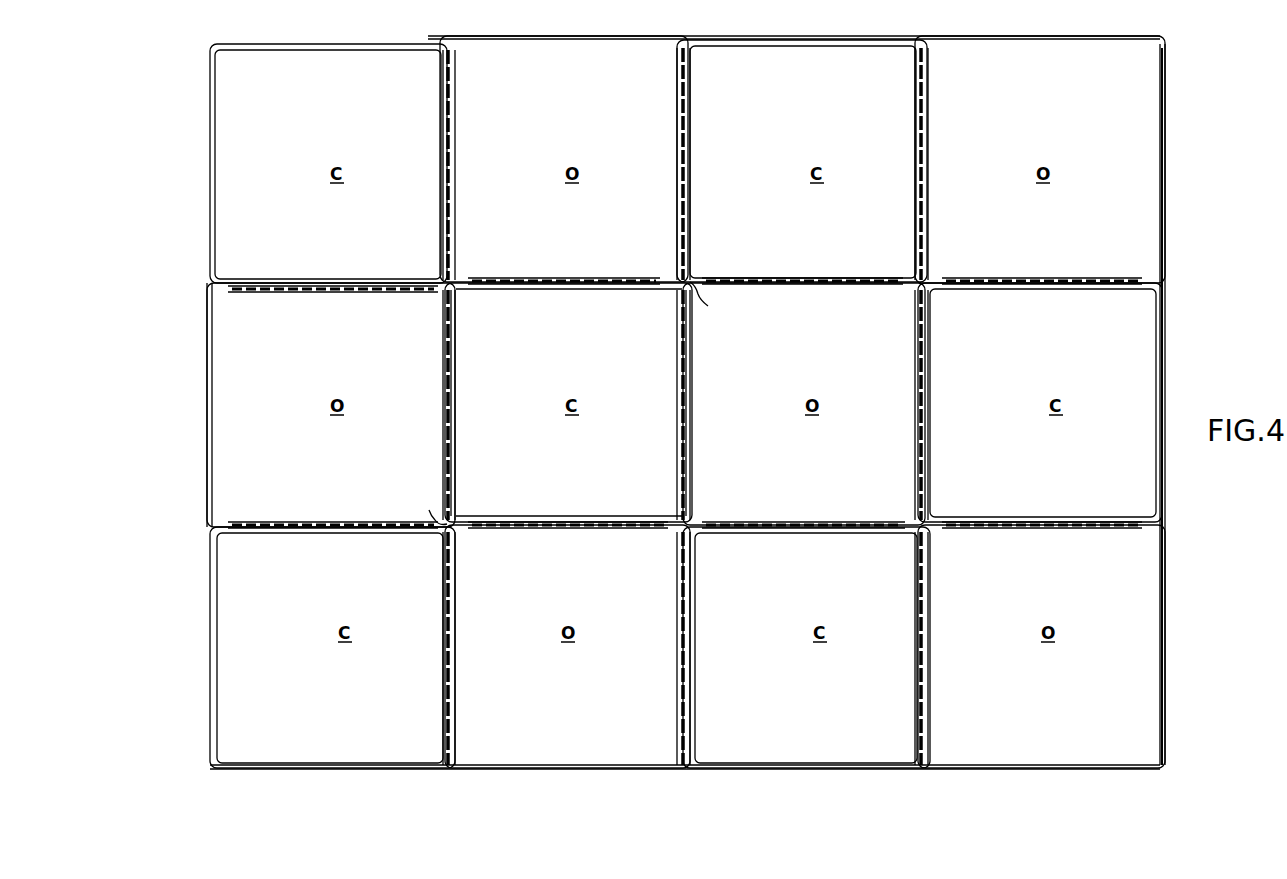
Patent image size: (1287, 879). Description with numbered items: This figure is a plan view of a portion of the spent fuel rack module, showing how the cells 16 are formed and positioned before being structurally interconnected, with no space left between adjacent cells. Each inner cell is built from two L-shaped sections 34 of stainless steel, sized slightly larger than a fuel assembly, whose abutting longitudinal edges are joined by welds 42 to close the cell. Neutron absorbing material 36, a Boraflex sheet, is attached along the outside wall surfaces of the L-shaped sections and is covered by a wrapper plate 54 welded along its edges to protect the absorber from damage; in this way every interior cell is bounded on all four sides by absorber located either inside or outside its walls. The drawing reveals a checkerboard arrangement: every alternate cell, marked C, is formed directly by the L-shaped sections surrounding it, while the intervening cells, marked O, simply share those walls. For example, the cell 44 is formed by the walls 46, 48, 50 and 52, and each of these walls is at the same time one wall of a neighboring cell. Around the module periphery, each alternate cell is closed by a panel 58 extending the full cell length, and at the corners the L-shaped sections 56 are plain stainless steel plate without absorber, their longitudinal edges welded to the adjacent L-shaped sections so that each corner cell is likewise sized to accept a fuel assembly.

The cell 16 is at (443, 144).
The L-shaped section 34 is at (403, 48).
The neutron absorbing material 36 is at (454, 193).
The weld 42 is at (708, 310).
The cell 44 is at (624, 360).
The wall 46 is at (570, 289).
The wall 48 is at (682, 382).
The wall 50 is at (512, 522).
The wall 52 is at (454, 426).
The wrapper plate 54 is at (390, 290).
The corner L-shaped section 56 is at (1166, 104).
The panel 58 is at (646, 40).